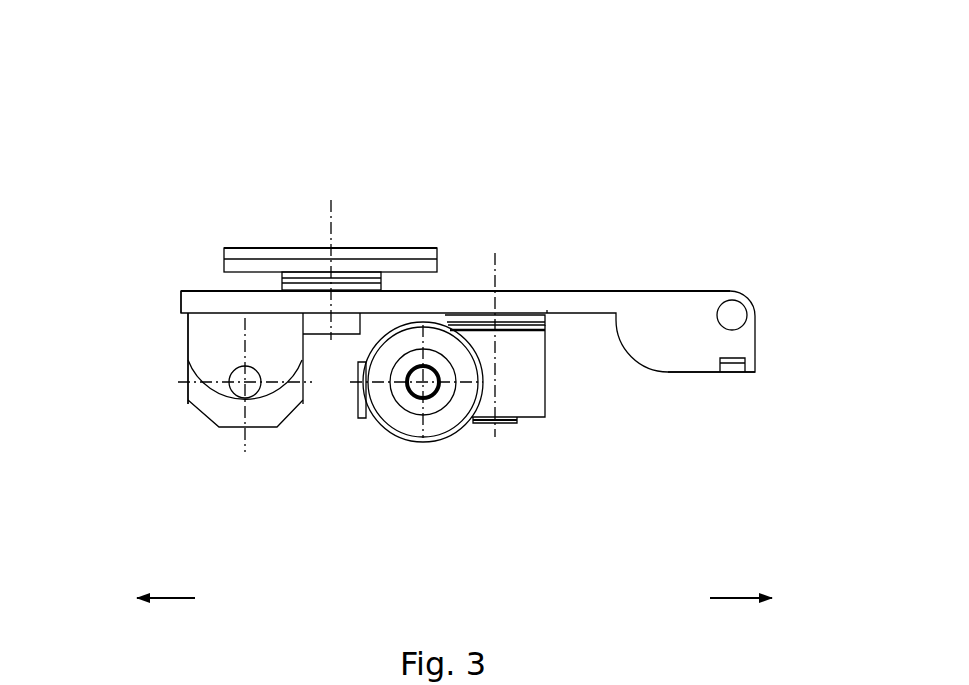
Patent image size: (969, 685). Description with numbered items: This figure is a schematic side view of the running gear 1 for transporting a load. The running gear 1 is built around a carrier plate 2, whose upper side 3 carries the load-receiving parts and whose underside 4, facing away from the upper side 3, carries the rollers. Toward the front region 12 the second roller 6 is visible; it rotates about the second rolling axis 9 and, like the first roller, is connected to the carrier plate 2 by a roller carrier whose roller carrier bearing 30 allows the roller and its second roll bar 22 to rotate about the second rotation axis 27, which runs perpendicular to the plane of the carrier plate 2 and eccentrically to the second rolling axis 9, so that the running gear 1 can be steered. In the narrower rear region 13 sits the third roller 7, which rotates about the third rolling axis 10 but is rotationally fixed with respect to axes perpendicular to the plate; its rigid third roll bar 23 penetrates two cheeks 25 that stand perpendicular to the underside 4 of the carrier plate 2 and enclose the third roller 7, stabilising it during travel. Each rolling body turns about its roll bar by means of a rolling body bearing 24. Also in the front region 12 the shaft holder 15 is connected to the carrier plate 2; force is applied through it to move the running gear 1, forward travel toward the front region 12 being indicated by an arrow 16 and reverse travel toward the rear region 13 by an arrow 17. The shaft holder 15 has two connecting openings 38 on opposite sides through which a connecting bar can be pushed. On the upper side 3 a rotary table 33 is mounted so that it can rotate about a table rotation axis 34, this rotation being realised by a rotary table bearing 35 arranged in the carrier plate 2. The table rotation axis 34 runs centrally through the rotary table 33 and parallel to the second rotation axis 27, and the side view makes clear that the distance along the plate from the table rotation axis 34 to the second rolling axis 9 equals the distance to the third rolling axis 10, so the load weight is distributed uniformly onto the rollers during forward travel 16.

The running gear 1 is at (752, 167).
The carrier plate 2 is at (207, 289).
The upper side 3 is at (182, 291).
The underside 4 is at (387, 313).
The second roller 6 is at (350, 442).
The third roller 7 is at (183, 432).
The second rolling axis 9 is at (418, 392).
The third rolling axis 10 is at (222, 430).
The front region 12 is at (508, 163).
The rear region 13 is at (186, 163).
The shaft holder 15 is at (655, 382).
The arrow indicating forward travel 16 is at (730, 597).
The arrow indicating reverse travel 17 is at (175, 597).
The second roll bar 22 is at (447, 393).
The third roll bar 23 is at (230, 377).
The rolling body bearing 24 is at (435, 403).
The cheeks 25 is at (188, 330).
The second rotation axis 27 is at (497, 263).
The roller carrier bearing 30 is at (550, 387).
The rotary table 33 is at (275, 247).
The table rotation axis 34 is at (333, 212).
The rotary table bearing 35 is at (392, 283).
The connecting openings 38 is at (733, 314).